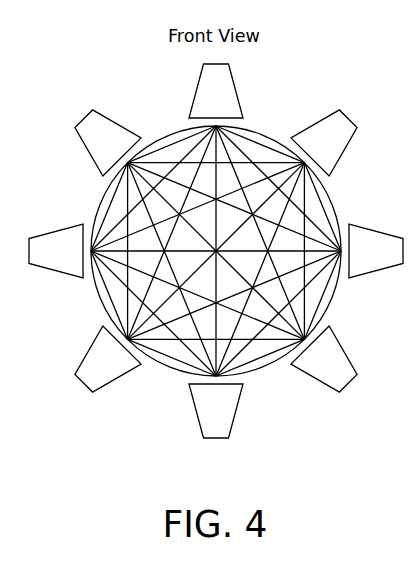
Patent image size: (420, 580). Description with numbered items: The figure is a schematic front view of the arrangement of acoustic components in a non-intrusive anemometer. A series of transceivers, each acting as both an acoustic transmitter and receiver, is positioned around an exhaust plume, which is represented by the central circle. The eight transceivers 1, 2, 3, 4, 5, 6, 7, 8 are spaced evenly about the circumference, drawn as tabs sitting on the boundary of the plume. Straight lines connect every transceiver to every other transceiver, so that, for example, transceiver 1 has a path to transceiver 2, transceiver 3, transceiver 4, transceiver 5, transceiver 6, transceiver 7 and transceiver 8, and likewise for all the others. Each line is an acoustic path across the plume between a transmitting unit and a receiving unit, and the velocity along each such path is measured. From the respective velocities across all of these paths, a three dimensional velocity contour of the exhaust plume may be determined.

The transceiver 1 is at (216, 91).
The transceiver 2 is at (329, 138).
The transceiver 3 is at (376, 251).
The transceiver 4 is at (329, 364).
The transceiver 5 is at (216, 411).
The transceiver 6 is at (103, 364).
The transceiver 7 is at (56, 251).
The transceiver 8 is at (103, 138).